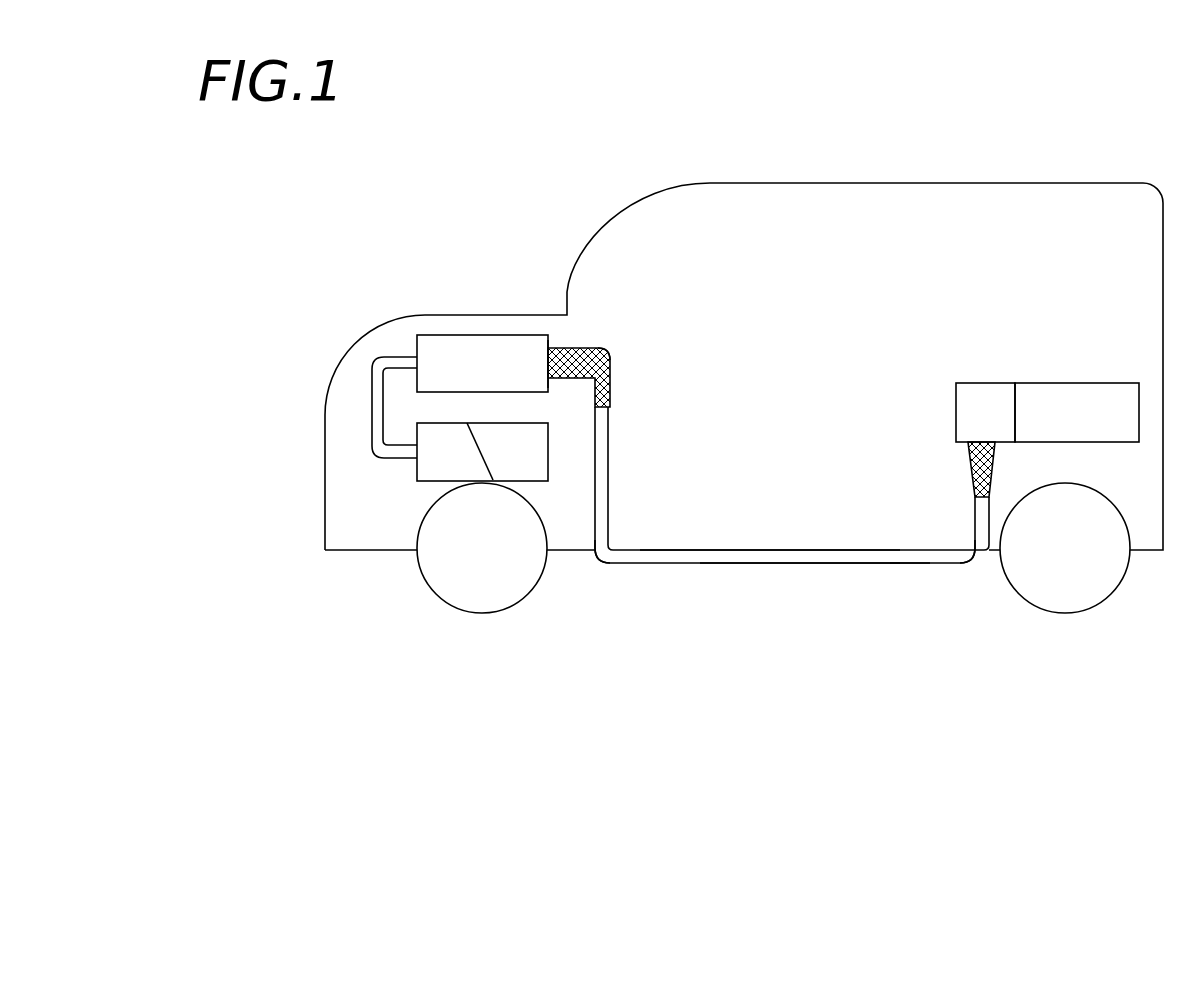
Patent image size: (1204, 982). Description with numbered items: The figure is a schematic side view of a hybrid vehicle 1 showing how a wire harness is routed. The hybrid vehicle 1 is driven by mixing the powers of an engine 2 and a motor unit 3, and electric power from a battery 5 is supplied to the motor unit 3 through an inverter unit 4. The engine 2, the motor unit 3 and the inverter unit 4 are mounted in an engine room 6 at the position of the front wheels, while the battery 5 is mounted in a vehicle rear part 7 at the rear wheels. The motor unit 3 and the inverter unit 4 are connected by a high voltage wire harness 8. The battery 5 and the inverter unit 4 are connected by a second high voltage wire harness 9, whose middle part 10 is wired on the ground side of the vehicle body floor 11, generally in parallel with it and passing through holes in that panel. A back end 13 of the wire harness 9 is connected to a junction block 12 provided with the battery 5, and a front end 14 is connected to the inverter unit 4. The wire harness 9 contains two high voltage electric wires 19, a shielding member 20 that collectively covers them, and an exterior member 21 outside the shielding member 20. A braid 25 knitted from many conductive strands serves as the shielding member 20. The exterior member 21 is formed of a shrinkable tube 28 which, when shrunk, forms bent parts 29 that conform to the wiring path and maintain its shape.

The hybrid vehicle 1 is at (540, 193).
The engine 2 is at (532, 463).
The motor unit 3 is at (435, 470).
The inverter unit 4 is at (450, 357).
The battery 5 is at (1060, 383).
The engine room 6 is at (343, 500).
The vehicle rear part 7 is at (1147, 520).
The high voltage wire harness 8 is at (380, 380).
The wire harness 9 is at (818, 570).
The middle part 10 is at (690, 565).
The vehicle body floor 11 is at (743, 550).
The junction block 12 is at (978, 383).
The back end 13 is at (967, 448).
The front end 14 is at (549, 343).
The high voltage electric wires 19 is at (905, 565).
The shielding member 20 is at (616, 362).
The exterior member 21 is at (614, 484).
The braid 25 is at (587, 348).
The shrinkable tube 28 is at (865, 555).
The bent parts 29 is at (600, 557).